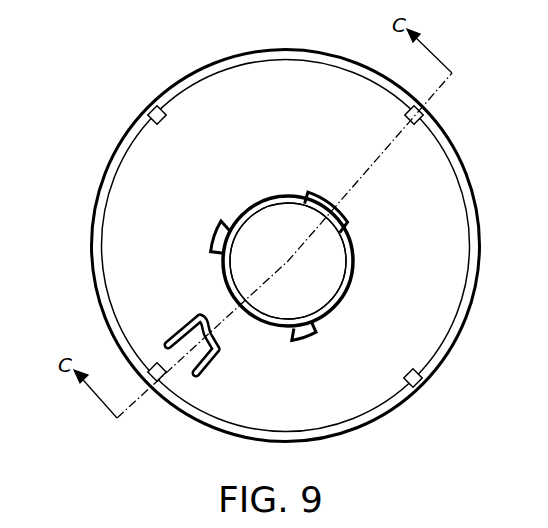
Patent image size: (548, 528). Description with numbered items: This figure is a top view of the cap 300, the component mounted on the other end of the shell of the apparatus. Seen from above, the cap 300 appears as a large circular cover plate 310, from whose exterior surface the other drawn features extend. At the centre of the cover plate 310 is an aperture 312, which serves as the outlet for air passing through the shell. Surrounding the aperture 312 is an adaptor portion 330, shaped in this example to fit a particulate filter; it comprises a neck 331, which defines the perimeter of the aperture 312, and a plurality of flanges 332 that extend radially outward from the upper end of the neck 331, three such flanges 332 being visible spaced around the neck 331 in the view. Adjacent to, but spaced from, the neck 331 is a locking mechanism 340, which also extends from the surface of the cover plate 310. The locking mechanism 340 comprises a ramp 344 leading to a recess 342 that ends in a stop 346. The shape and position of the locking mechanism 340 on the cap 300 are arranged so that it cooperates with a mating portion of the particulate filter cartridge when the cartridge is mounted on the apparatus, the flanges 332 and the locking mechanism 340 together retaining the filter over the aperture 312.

The cap 300 is at (152, 60).
The cover plate 310 is at (286, 246).
The aperture 312 is at (288, 261).
The adaptor portion 330 is at (350, 240).
The neck 331 is at (347, 295).
The flanges 332 is at (348, 212).
The locking mechanism 340 is at (118, 380).
The recess 342 is at (182, 333).
The ramp 344 is at (205, 368).
The stop 346 is at (193, 317).